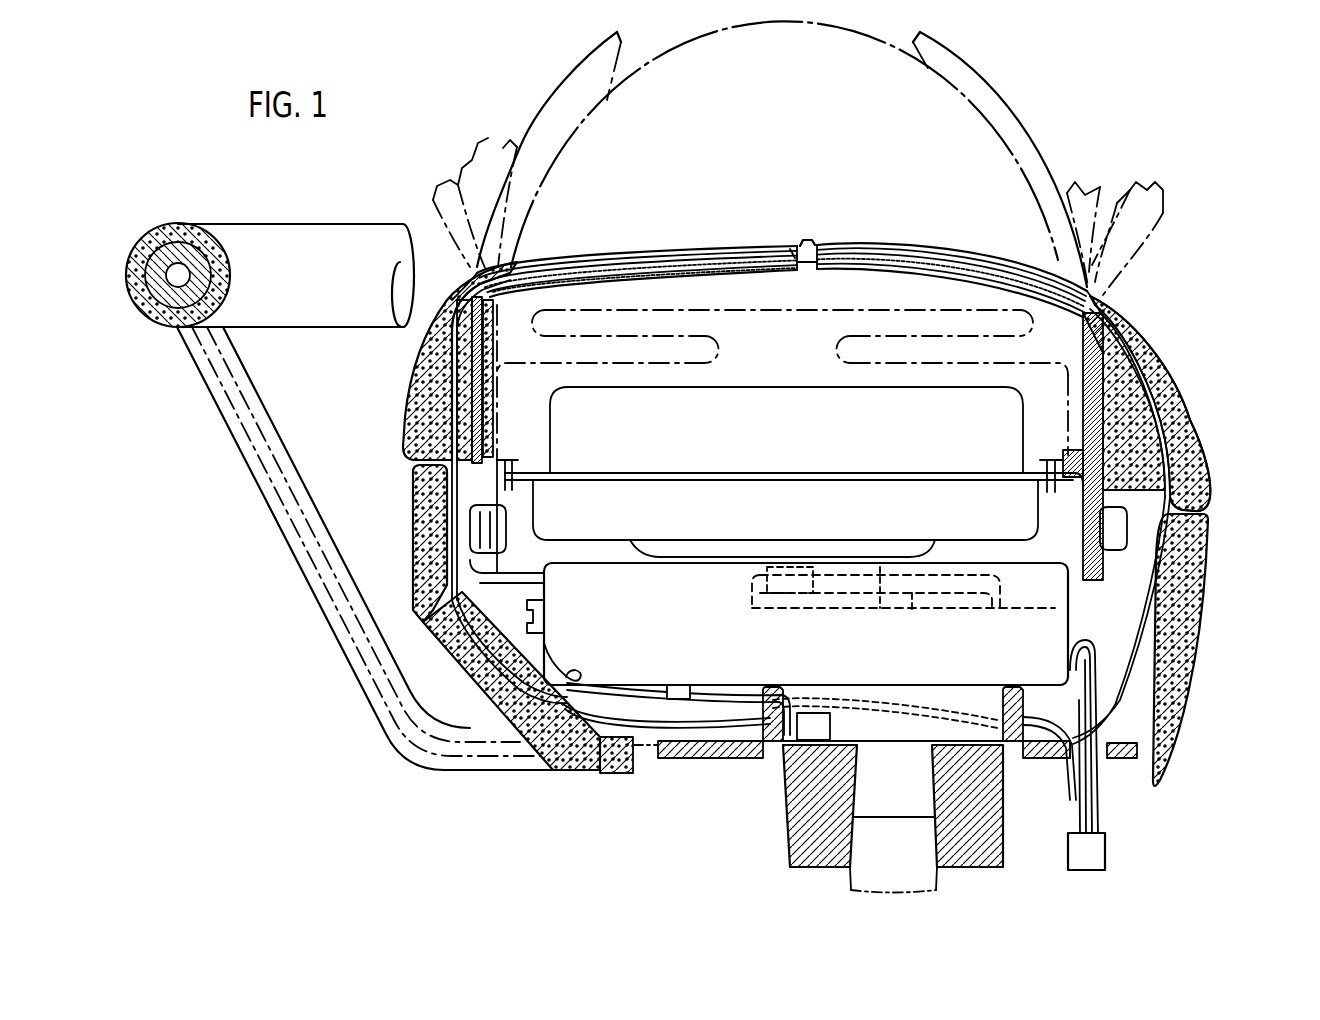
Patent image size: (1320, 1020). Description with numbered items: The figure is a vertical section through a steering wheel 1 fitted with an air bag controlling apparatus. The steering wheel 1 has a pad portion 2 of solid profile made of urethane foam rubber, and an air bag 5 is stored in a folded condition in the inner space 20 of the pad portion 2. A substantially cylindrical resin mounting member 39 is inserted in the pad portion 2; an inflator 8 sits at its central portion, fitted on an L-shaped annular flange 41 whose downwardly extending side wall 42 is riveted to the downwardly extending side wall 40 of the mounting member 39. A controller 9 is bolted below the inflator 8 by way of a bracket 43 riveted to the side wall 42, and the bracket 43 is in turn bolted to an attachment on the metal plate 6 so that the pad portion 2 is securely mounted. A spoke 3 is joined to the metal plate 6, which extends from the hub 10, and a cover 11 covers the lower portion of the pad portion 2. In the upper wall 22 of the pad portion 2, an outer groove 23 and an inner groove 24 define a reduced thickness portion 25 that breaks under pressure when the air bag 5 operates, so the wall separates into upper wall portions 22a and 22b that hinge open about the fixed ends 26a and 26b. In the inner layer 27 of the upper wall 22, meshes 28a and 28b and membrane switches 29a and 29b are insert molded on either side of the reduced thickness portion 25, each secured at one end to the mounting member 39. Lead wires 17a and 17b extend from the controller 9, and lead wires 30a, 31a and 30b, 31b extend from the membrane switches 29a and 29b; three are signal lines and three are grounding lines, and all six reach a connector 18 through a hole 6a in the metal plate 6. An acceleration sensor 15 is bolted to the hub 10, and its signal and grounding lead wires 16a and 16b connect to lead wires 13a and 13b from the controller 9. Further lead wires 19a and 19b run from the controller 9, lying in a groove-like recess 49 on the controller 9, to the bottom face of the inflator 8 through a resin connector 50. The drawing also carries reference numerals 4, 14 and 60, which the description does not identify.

The steering wheel 1 is at (1216, 152).
The pad portion 2 is at (1190, 457).
The spoke 3 is at (240, 412).
The support rod 4 is at (298, 233).
The air bag 5 is at (527, 330).
The metal plate 6 is at (735, 754).
The hole 6a is at (1070, 766).
The inflator 8 is at (757, 393).
The controller 9 is at (948, 675).
The hub 10 is at (792, 840).
The cover 11 is at (425, 502).
The lead wire 13a is at (540, 650).
The lead wire 13b is at (567, 698).
The sleeve 14 is at (680, 705).
The acceleration sensor 15 is at (835, 726).
The lead wire 16a is at (708, 690).
The lead wire 16b is at (727, 700).
The lead wire 17a is at (1088, 651).
The lead wire 17b is at (1090, 673).
The connector 18 is at (1108, 858).
The lead wire 19a is at (880, 608).
The lead wire 19b is at (913, 612).
The inner space 20 is at (804, 351).
The upper wall 22 is at (858, 246).
The upper wall portion 22a is at (462, 168).
The upper wall portion 22b is at (1100, 187).
The groove 23 is at (808, 240).
The groove 24 is at (805, 272).
The reduced thickness portion 25 is at (790, 249).
The fixed end 26a is at (497, 280).
The fixed end 26b is at (1100, 285).
The inner layer 27 is at (669, 252).
The mesh 28a is at (668, 283).
The mesh 28b is at (960, 270).
The membrane switch 29a is at (615, 257).
The membrane switch 29b is at (920, 249).
The lead wire 30a is at (453, 343).
The lead wire 30b is at (1127, 367).
The lead wire 31a is at (457, 360).
The lead wire 31b is at (1147, 372).
The mounting member 39 is at (470, 415).
The side wall 40 is at (1098, 580).
The flange 41 is at (1054, 490).
The side wall 42 is at (492, 554).
The bracket 43 is at (517, 578).
The recess 49 is at (1042, 603).
The connector 50 is at (876, 603).
The pin 60 is at (930, 879).